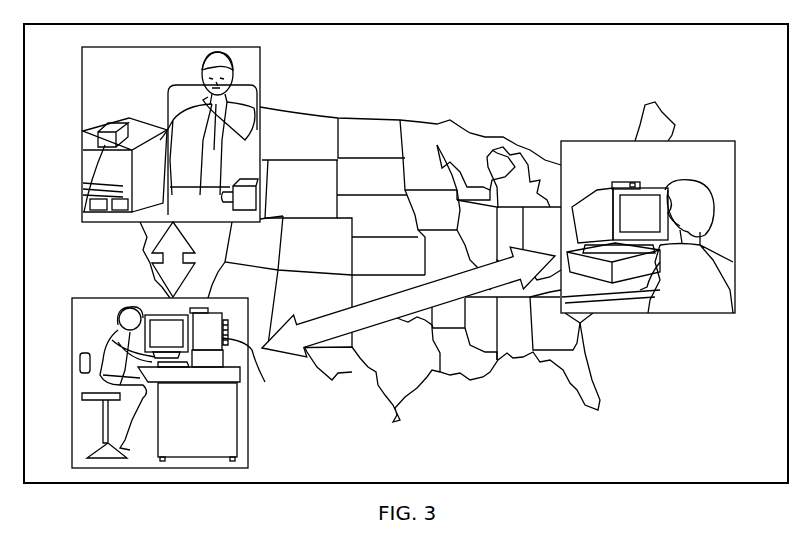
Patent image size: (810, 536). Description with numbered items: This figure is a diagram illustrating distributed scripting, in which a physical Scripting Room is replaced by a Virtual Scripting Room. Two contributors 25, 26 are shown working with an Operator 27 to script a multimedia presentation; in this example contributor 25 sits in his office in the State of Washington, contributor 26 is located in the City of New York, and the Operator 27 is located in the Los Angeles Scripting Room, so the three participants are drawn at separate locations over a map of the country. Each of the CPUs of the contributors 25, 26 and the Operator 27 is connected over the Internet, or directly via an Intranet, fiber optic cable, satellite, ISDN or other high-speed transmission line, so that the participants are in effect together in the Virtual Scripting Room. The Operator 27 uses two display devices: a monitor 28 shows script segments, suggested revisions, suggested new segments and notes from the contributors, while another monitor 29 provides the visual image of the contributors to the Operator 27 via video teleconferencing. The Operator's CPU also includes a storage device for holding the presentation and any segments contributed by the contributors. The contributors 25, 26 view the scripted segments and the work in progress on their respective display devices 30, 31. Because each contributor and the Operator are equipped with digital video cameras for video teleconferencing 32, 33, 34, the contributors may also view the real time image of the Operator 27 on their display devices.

The contributor 25 is at (232, 58).
The contributor 26 is at (687, 173).
The Operator 27 is at (118, 318).
The monitor 28 is at (160, 325).
The monitor 29 is at (265, 382).
The display device 30 is at (137, 137).
The display device 31 is at (612, 190).
The digital video camera for video teleconferencing 32 is at (115, 119).
The digital video camera for video teleconferencing 33 is at (617, 183).
The digital video camera for video teleconferencing 34 is at (200, 308).